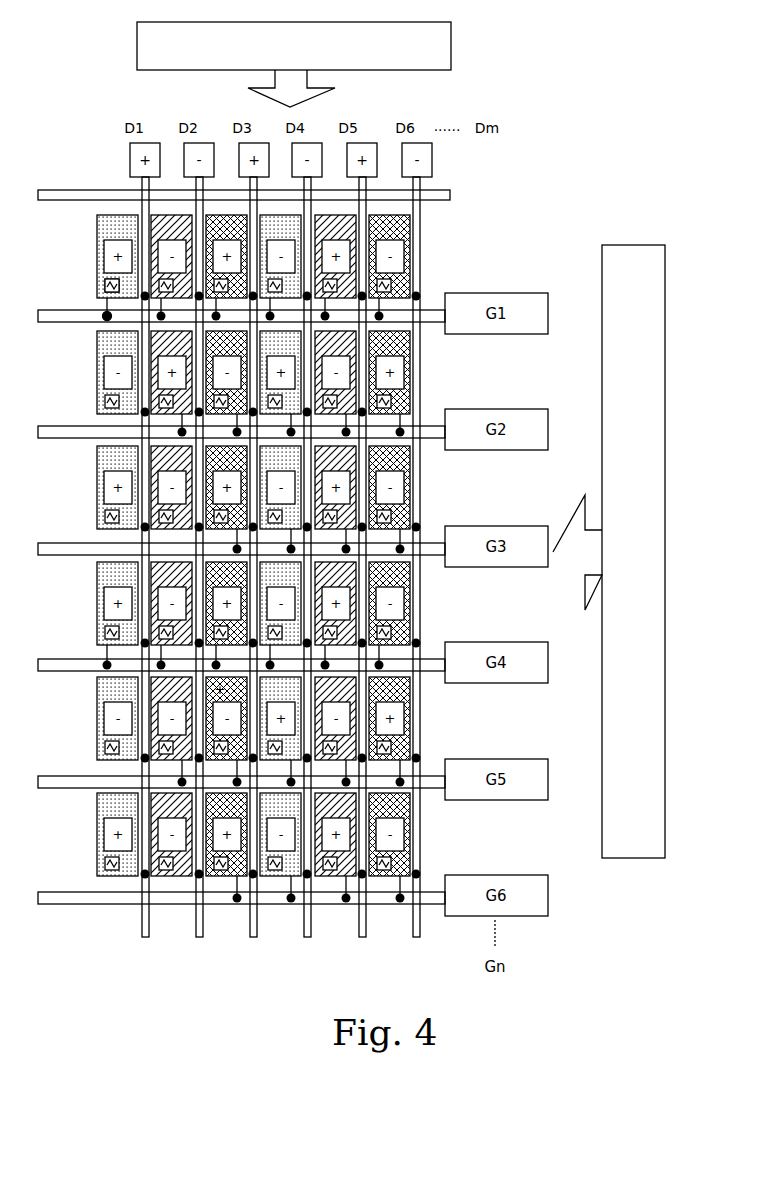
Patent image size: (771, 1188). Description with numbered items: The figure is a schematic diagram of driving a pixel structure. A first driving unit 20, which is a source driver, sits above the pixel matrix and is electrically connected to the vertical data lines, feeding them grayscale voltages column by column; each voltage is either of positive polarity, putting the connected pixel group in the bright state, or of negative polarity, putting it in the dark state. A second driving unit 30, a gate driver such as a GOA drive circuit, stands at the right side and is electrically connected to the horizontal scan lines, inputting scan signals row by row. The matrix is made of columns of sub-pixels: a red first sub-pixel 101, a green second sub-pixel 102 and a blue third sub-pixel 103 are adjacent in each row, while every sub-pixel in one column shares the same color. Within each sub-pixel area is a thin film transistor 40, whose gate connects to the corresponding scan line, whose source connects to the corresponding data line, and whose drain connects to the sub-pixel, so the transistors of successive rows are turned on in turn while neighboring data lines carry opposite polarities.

The first driving unit 20 is at (137, 30).
The second driving unit 30 is at (613, 284).
The thin film transistor 40 is at (107, 289).
The first sub-pixel 101 is at (112, 232).
The second sub-pixel 102 is at (150, 338).
The third sub-pixel 103 is at (212, 358).